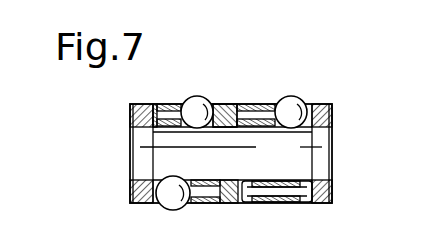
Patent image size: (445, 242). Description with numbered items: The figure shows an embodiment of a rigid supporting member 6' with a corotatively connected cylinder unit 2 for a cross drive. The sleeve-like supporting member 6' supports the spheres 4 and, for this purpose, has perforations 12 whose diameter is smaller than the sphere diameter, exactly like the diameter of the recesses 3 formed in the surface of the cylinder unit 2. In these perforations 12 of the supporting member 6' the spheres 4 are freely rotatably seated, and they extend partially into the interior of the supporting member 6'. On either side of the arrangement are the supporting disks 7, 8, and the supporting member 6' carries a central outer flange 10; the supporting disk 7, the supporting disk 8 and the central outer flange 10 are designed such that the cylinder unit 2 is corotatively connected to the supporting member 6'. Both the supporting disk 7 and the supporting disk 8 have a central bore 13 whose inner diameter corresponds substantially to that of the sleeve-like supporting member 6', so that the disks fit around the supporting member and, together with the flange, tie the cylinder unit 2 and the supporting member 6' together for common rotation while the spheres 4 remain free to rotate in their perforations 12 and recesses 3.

The cylinder unit 2 is at (260, 103).
The recesses 3 is at (262, 188).
The spheres 4 is at (198, 98).
The supporting member 6' is at (286, 217).
The supporting disk 7 is at (130, 115).
The supporting disk 8 is at (333, 113).
The central outer flange 10 is at (230, 105).
The perforations 12 is at (231, 151).
The central bore 13 is at (137, 171).